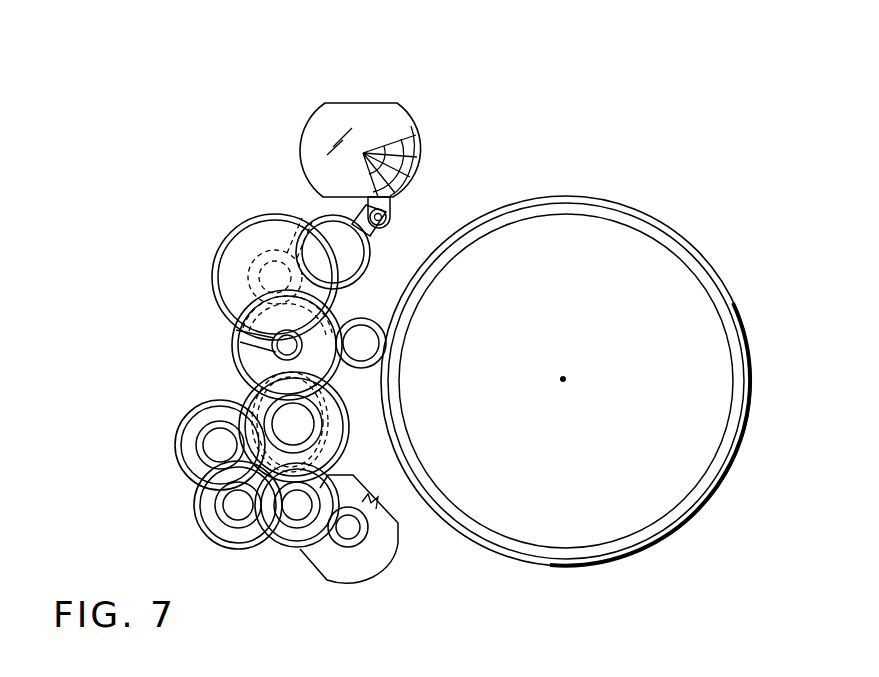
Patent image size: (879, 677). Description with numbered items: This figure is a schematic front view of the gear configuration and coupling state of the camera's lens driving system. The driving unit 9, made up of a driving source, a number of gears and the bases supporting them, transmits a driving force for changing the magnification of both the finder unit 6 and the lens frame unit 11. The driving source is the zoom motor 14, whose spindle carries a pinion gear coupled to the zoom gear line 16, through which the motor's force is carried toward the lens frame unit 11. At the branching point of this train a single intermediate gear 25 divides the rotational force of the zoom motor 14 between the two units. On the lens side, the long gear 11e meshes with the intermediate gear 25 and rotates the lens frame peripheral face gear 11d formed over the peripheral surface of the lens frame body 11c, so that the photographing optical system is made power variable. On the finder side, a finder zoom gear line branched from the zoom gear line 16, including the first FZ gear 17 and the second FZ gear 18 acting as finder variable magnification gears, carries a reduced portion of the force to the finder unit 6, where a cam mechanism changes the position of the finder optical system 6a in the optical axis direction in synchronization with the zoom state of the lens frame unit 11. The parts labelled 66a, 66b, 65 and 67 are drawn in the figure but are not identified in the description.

The finder unit 6 is at (368, 94).
The finder optical system 6a is at (383, 120).
The agitating member 66a is at (408, 190).
The connecting arm 66b is at (357, 219).
The support bracket 65 is at (393, 213).
The supply roller 67 is at (300, 216).
The second FZ gear 18 is at (212, 256).
The first FZ gear 17 is at (237, 333).
The intermediate gear 25 is at (232, 350).
The driving unit 9 is at (98, 367).
The zoom gear line 16 is at (158, 402).
The zoom motor 14 is at (370, 565).
The lens frame unit 11 is at (580, 128).
The lens frame body 11c is at (657, 240).
The lens frame peripheral face gear 11d is at (622, 203).
The long gear 11e is at (372, 318).